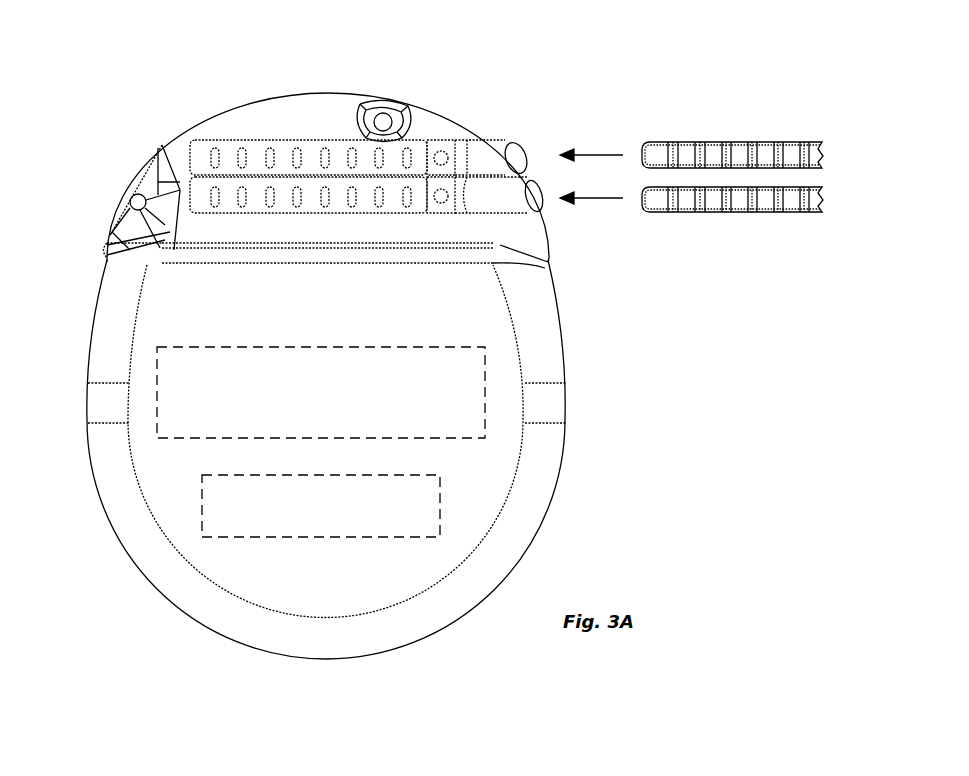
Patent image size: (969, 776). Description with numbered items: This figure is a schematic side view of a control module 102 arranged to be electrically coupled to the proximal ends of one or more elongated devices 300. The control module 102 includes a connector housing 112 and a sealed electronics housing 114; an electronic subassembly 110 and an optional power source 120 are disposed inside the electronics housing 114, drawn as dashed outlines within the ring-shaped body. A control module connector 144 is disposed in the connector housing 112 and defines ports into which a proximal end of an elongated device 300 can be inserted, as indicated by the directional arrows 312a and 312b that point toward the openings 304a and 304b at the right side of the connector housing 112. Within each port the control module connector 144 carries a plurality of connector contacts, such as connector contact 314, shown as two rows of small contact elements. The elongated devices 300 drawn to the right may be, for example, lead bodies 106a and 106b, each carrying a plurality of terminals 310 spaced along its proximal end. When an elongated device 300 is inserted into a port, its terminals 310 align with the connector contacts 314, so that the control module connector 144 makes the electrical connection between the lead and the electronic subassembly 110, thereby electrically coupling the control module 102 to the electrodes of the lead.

The control module 102 is at (130, 125).
The electronic subassembly 110 is at (177, 399).
The connector housing 112 is at (298, 102).
The sealed electronics housing 114 is at (158, 323).
The power source 120 is at (222, 512).
The control module connector 144 is at (417, 142).
The connector contact 314 is at (223, 143).
The first opening 304a is at (529, 136).
The second opening 304b is at (566, 222).
The directional arrow 312a is at (597, 150).
The directional arrow 312b is at (603, 200).
The lead body 106a is at (653, 140).
The lead body 106b is at (653, 214).
The terminals 310 is at (815, 131).
The elongated device 300 is at (779, 88).